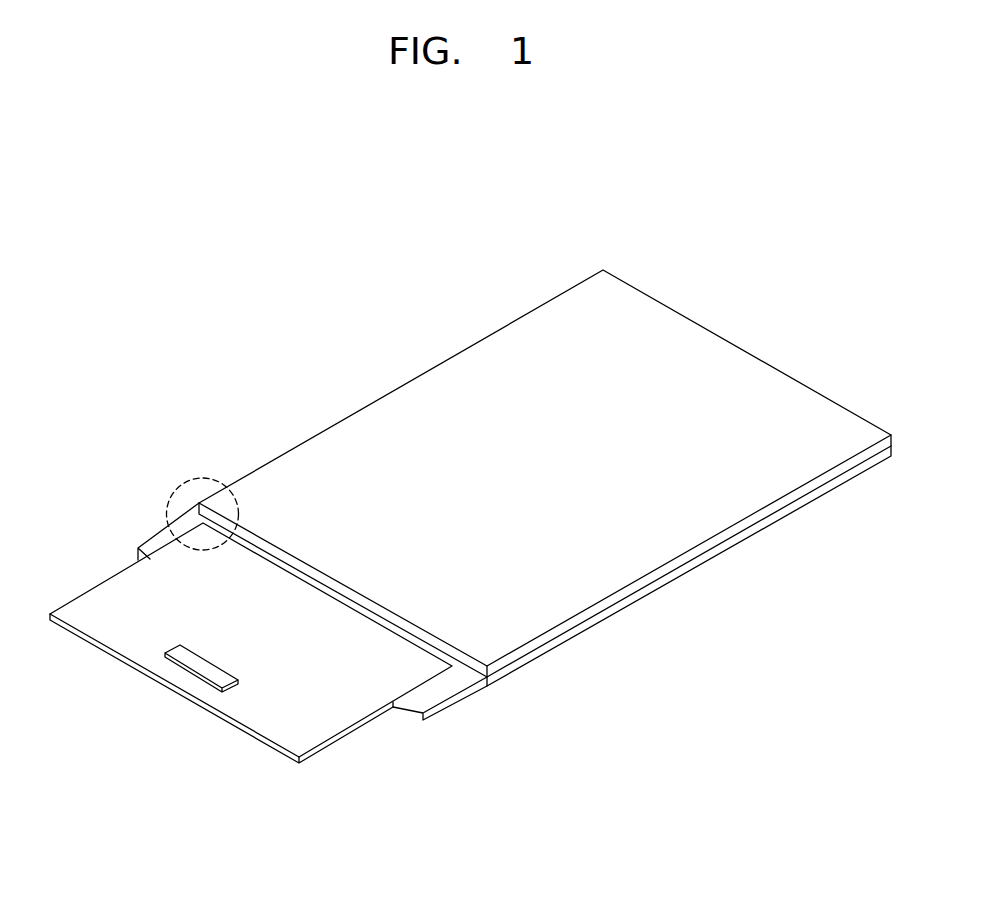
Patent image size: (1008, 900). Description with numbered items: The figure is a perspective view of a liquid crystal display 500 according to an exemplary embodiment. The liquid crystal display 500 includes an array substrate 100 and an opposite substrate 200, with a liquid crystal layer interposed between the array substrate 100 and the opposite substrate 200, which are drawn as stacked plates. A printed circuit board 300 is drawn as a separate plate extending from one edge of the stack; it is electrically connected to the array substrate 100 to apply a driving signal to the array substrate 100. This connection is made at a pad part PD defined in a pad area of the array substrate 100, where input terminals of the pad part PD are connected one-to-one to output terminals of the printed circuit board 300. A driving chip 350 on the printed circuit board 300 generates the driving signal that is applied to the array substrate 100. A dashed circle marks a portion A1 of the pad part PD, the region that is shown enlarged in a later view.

The liquid crystal display 500 is at (709, 263).
The array substrate 100 is at (739, 540).
The opposite substrate 200 is at (686, 572).
The printed circuit board 300 is at (122, 592).
The driving chip 350 is at (197, 663).
The pad part PD is at (447, 688).
The portion A1 is at (192, 479).